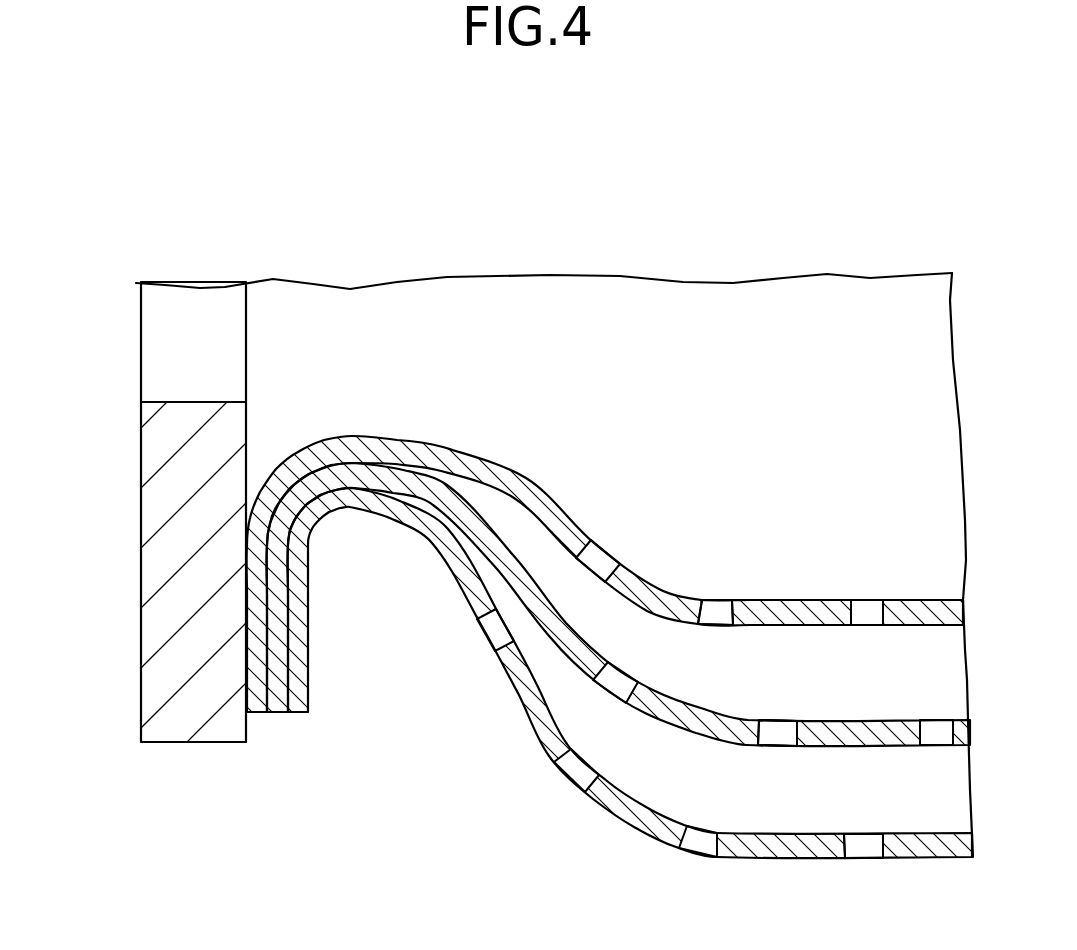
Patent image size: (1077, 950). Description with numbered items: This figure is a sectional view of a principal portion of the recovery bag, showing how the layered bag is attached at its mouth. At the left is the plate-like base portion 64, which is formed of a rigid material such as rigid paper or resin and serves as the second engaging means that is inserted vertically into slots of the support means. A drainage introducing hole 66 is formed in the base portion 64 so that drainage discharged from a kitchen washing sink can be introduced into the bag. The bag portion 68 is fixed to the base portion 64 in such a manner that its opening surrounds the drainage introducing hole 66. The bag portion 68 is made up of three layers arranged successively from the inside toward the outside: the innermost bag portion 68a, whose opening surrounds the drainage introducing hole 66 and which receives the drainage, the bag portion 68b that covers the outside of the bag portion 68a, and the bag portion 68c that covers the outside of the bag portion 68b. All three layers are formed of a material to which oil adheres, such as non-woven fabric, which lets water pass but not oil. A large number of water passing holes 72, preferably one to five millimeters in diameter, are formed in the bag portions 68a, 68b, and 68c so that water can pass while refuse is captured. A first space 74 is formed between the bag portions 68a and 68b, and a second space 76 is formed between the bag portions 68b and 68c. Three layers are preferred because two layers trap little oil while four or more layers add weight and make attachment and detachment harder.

The base portion 64 is at (188, 590).
The drainage introducing hole 66 is at (188, 342).
The bag portion 68 is at (605, 475).
The bag portion 68a is at (508, 490).
The bag portion 68b is at (557, 625).
The bag portion 68c is at (260, 850).
The water passing holes 72 is at (717, 613).
The first space 74 is at (802, 685).
The second space 76 is at (802, 813).